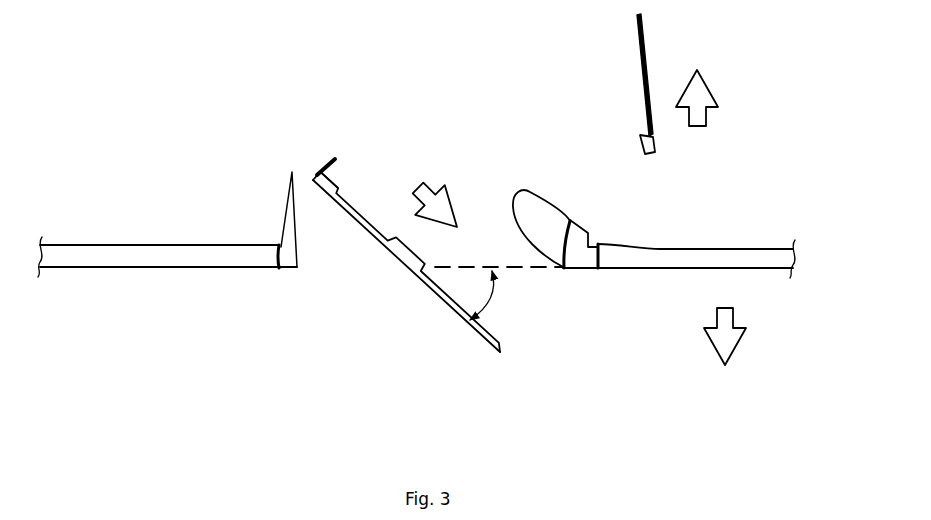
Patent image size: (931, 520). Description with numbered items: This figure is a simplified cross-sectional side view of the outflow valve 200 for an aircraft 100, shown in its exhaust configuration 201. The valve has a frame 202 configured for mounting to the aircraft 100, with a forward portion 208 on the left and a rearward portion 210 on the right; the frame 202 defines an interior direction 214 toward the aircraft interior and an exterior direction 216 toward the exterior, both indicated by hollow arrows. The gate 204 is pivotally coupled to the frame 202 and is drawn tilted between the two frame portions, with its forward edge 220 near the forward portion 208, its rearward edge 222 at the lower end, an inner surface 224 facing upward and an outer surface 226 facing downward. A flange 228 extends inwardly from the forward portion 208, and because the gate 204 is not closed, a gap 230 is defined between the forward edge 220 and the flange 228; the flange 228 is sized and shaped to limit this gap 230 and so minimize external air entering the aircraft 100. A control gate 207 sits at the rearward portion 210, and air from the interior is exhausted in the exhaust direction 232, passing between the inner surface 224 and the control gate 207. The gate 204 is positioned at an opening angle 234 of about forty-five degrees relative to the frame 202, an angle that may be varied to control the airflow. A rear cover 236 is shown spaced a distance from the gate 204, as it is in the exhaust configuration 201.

The aircraft 100 is at (762, 269).
The outflow valve 200 is at (346, 271).
The exhaust configuration 201 is at (684, 307).
The frame 202 is at (300, 264).
The gate 204 is at (351, 239).
The control gate 207 is at (549, 215).
The forward portion 208 is at (197, 201).
The rearward portion 210 is at (606, 230).
The interior direction 214 is at (708, 122).
The exterior direction 216 is at (737, 318).
The forward edge 220 is at (315, 175).
The rearward edge 222 is at (498, 353).
The inner surface 224 is at (369, 210).
The outer surface 226 is at (434, 313).
The flange 228 is at (287, 196).
The gap 230 is at (300, 164).
The exhaust direction 232 is at (432, 178).
The opening angle 234 is at (488, 298).
The rear cover 236 is at (645, 38).